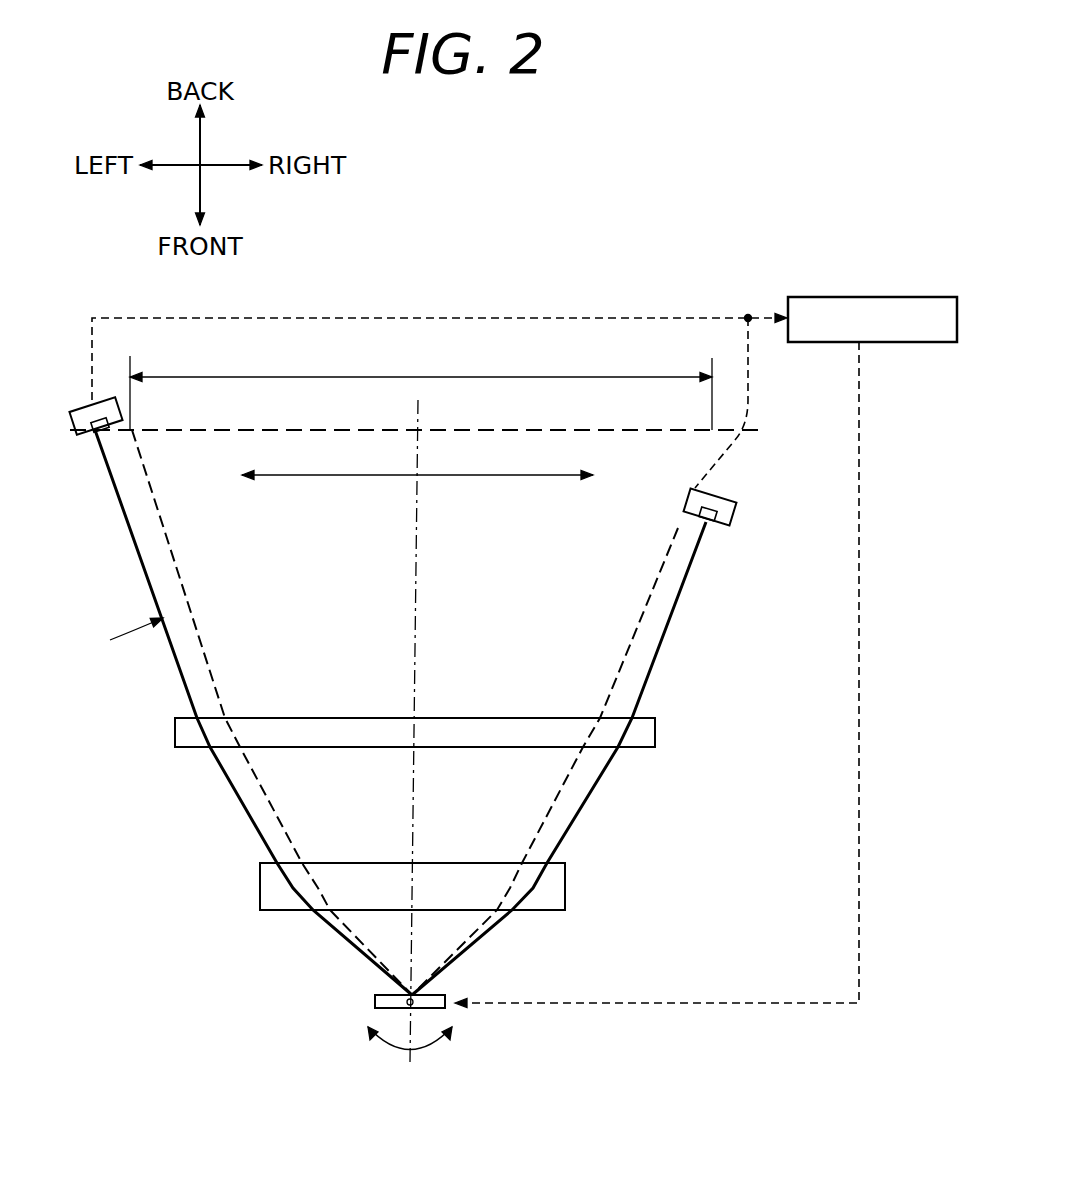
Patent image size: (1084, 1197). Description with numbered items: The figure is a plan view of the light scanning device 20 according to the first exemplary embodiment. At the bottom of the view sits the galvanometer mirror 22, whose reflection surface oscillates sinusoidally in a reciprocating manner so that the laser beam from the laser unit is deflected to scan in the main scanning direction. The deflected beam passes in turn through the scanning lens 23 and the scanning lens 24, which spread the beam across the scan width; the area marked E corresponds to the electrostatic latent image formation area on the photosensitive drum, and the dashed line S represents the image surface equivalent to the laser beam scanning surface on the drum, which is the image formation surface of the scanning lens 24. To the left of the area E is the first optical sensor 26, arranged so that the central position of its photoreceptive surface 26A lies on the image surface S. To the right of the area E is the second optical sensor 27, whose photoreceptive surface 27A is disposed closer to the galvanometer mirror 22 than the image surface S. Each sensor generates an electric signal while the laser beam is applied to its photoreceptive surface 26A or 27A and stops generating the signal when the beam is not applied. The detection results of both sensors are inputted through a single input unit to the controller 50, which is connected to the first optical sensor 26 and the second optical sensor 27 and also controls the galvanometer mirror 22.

The light scanning device 20 is at (163, 960).
The galvanometer mirror 22 is at (375, 1000).
The scanning lens 23 is at (260, 885).
The scanning lens 24 is at (175, 730).
The first optical sensor 26 is at (77, 400).
The photoreceptive surface 26A is at (98, 438).
The second optical sensor 27 is at (740, 515).
The photoreceptive surface 27A is at (710, 526).
The controller 50 is at (885, 297).